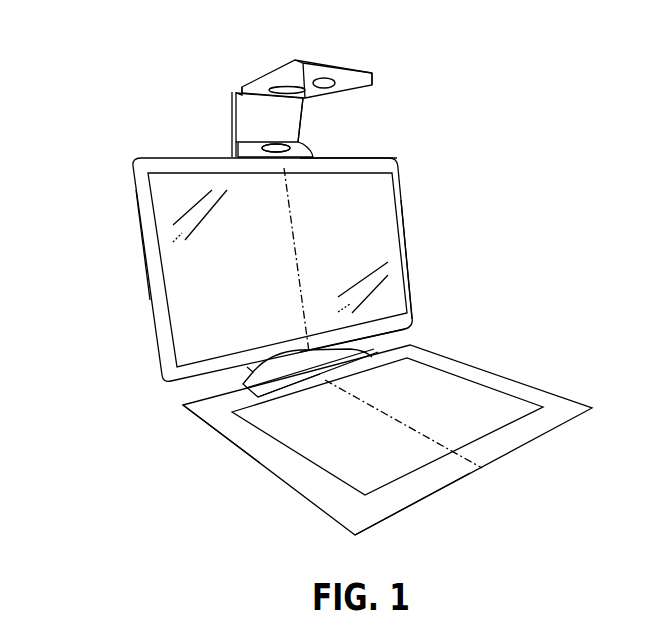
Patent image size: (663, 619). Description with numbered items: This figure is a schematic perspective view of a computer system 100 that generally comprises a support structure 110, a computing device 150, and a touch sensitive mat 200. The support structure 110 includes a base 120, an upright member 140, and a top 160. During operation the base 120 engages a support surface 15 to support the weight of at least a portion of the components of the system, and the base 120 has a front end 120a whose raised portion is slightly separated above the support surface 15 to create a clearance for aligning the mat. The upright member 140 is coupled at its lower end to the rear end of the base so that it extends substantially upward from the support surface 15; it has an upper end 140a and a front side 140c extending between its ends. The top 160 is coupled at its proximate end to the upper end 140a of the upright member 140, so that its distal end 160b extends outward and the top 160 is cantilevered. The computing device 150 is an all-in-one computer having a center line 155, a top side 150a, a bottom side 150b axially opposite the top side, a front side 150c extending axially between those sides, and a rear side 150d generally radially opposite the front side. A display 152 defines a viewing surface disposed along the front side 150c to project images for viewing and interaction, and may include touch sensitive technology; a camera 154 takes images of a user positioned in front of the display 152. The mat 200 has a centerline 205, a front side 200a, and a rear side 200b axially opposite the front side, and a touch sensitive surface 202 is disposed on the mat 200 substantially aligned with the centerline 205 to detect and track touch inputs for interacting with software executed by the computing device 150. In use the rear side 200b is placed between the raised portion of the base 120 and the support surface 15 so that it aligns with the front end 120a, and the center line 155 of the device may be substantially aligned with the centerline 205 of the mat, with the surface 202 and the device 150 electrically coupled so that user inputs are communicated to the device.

The computer system 100 is at (495, 115).
The support structure 110 is at (132, 137).
The base 120 is at (242, 385).
The front end 120a is at (302, 388).
The upright member 140 is at (233, 128).
The upper end 140a is at (233, 82).
The front side 140c is at (292, 110).
The computing device 150 is at (412, 222).
The top side 150a is at (369, 158).
The bottom side 150b is at (390, 330).
The front side 150c is at (393, 268).
The rear side 150d is at (135, 240).
The display 152 is at (390, 183).
The camera 154 is at (287, 166).
The center line 155 is at (302, 250).
The top 160 is at (307, 53).
The distal end 160b is at (370, 72).
The touch sensitive mat 200 is at (548, 392).
The front side 200a is at (398, 513).
The rear side 200b is at (183, 408).
The touch sensitive surface 202 is at (477, 420).
The centerline 205 is at (383, 410).
The support surface 15 is at (247, 540).